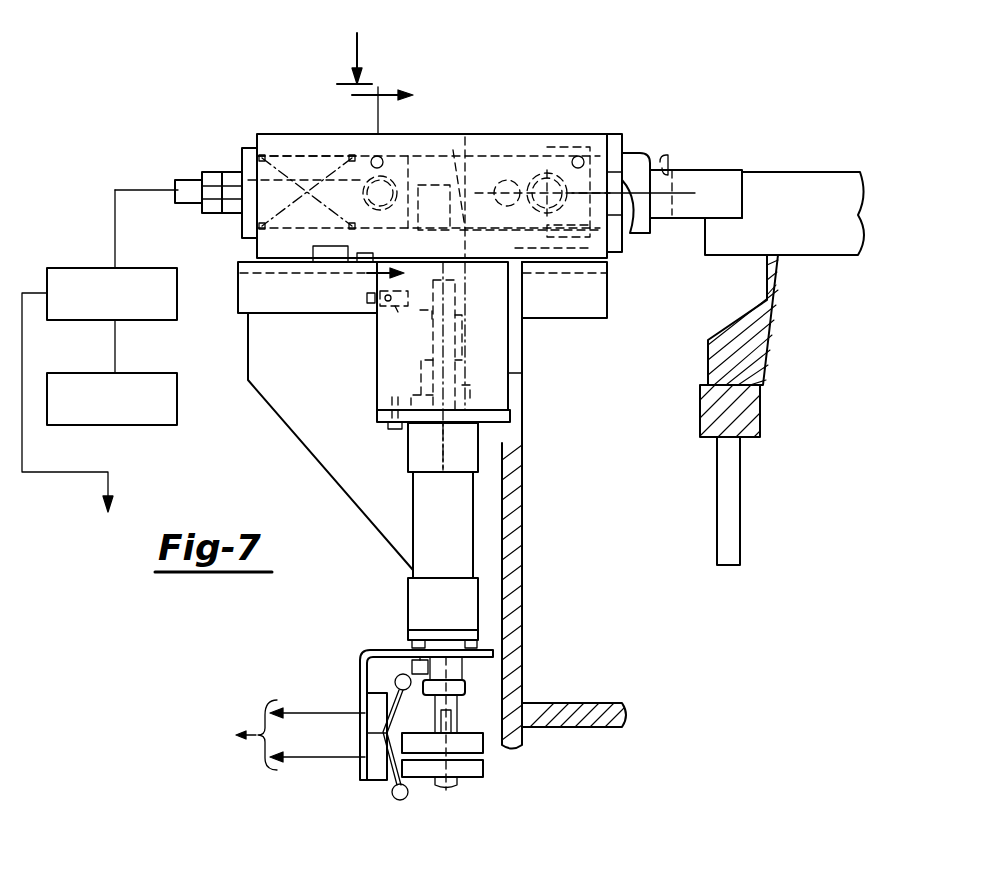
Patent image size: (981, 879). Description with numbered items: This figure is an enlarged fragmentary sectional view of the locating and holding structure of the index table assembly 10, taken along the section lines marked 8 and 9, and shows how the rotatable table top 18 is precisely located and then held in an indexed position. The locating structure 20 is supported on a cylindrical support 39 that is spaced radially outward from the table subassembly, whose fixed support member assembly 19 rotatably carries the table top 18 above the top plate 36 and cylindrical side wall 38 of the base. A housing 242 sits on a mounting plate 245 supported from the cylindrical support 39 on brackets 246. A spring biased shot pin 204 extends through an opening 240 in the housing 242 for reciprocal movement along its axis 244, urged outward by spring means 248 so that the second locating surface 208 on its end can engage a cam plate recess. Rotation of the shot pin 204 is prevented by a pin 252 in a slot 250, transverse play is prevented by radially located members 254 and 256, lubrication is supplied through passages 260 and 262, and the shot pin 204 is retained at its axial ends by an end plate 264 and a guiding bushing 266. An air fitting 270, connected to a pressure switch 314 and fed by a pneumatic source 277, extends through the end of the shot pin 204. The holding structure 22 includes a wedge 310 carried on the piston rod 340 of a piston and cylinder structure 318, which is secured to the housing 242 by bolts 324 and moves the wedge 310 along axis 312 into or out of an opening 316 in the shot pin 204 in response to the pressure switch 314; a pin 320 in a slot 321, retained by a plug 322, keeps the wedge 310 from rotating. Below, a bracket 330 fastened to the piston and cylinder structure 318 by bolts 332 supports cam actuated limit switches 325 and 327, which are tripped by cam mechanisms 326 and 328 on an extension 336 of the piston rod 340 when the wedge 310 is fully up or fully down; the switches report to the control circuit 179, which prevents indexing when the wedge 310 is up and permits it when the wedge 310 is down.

The section line 9- 9 is at (357, 69).
The section line 8- 8 is at (392, 179).
The housing 242 is at (430, 148).
The member 254 is at (325, 133).
The spring means 248 is at (278, 128).
The end plate 264 is at (248, 148).
The passage 260 is at (372, 156).
The slot 250 is at (483, 183).
The pin 252 is at (508, 190).
The opening 316 is at (478, 130).
The member 256 is at (537, 133).
The passage 262 is at (578, 155).
The locating structure 20 is at (605, 112).
The bushing 266 is at (625, 160).
The shot pin 204 is at (640, 165).
The table top 18 is at (820, 195).
The air fitting 270 is at (172, 182).
The axis 244 is at (590, 195).
The second locating surface 208 is at (600, 262).
The mounting plate 245 is at (245, 300).
The wedge 310 is at (455, 272).
The piston rod 340 is at (522, 373).
The opening 240 is at (532, 278).
The plug 322 is at (380, 305).
The pin 320 is at (395, 312).
The slot 321 is at (425, 312).
The bolts 324 is at (390, 428).
The piston and cylinder structure 318 is at (462, 450).
The axis 312 is at (428, 442).
The holding structure 22 is at (475, 540).
The brackets 246 is at (250, 348).
The index table assembly 10 is at (278, 428).
The support member assembly 19 is at (706, 362).
The top plate 36 is at (704, 415).
The cylindrical side wall 38 is at (737, 532).
The cylindrical support 39 is at (522, 578).
The bracket 330 is at (410, 668).
The bolts 332 is at (415, 668).
The limit switch 325 is at (372, 708).
The limit switch 327 is at (377, 785).
The extension 336 is at (455, 705).
The cam mechanism 326 is at (478, 745).
The cam mechanism 328 is at (480, 770).
The pressure switch 314 is at (58, 268).
The pneumatic source 277 is at (75, 348).
The control circuit 179 is at (148, 638).